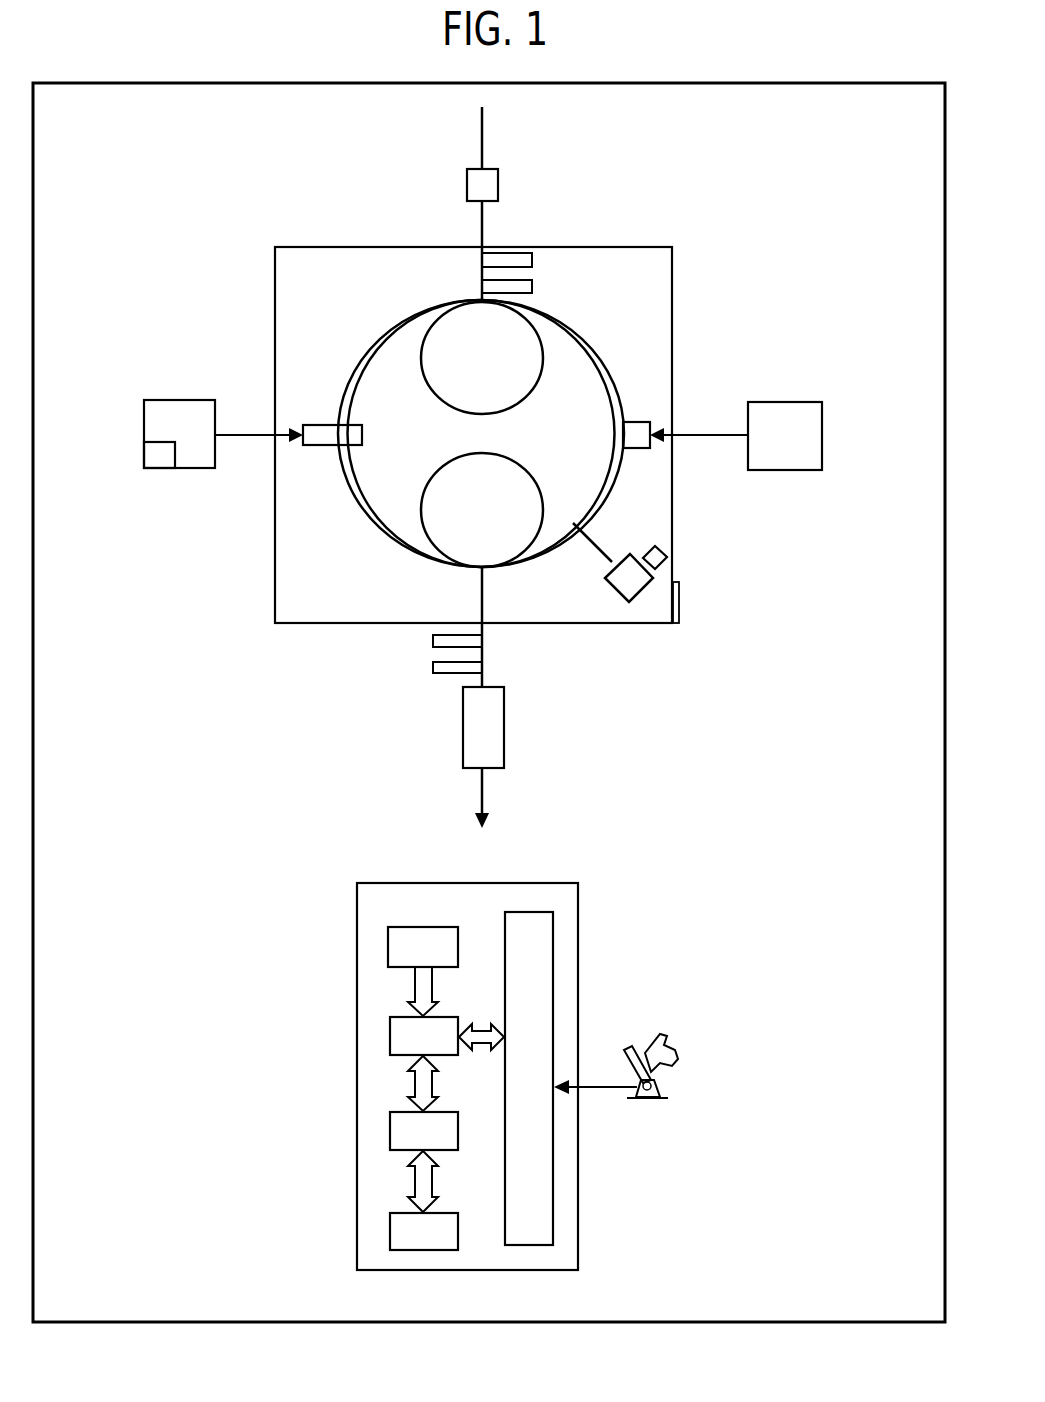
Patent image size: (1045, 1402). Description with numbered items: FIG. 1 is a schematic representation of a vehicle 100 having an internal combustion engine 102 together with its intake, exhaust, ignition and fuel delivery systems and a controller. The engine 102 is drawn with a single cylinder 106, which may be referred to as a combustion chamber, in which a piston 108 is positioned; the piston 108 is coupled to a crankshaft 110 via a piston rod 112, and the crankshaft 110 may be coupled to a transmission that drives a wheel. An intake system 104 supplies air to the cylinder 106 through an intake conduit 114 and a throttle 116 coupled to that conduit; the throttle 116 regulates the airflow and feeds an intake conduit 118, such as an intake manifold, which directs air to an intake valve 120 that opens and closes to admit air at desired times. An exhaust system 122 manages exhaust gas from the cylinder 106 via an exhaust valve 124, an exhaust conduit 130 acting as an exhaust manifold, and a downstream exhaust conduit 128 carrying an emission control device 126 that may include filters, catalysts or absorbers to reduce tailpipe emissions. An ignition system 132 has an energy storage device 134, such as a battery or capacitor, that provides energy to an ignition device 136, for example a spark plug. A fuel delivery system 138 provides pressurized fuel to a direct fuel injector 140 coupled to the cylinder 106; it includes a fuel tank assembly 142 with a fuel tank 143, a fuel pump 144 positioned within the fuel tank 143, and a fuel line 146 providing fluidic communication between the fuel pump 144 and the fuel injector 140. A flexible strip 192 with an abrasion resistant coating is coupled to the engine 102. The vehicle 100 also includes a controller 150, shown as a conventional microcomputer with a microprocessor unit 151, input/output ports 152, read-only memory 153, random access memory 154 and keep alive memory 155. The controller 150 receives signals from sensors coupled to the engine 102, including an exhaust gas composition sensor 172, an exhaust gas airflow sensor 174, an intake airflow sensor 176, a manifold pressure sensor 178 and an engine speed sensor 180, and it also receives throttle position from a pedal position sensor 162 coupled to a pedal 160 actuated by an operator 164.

The vehicle 100 is at (100, 83).
The internal combustion engine 102 is at (672, 300).
The intake system 104 is at (650, 158).
The cylinder 106 is at (397, 325).
The piston 108 is at (406, 325).
The crankshaft 110 is at (618, 588).
The piston rod 112 is at (595, 540).
The intake conduit 114 is at (482, 148).
The throttle 116 is at (498, 185).
The intake conduit 118 is at (482, 235).
The intake valve 120 is at (543, 357).
The exhaust system 122 is at (603, 678).
The exhaust valve 124 is at (543, 497).
The emission control device 126 is at (463, 745).
The exhaust conduit 128 is at (482, 783).
The exhaust conduit 130 is at (482, 595).
The ignition system 132 is at (845, 425).
The energy storage device 134 is at (755, 402).
The ignition device 136 is at (643, 413).
The fuel delivery system 138 is at (102, 435).
The fuel injector 140 is at (320, 425).
The fuel tank assembly 142 is at (160, 378).
The fuel tank 143 is at (205, 380).
The fuel pump 144 is at (175, 455).
The fuel line 146 is at (248, 437).
The controller 150 is at (362, 883).
The microprocessor unit 151 is at (456, 1003).
The input/output ports 152 is at (505, 945).
The read-only memory 153 is at (406, 915).
The random access memory 154 is at (456, 1097).
The keep alive memory 155 is at (456, 1198).
The pedal 160 is at (631, 1060).
The pedal position sensor 162 is at (657, 1090).
The operator 164 is at (673, 1050).
The exhaust gas composition sensor 172 is at (433, 641).
The exhaust gas airflow sensor 174 is at (433, 668).
The intake airflow sensor 176 is at (532, 257).
The manifold pressure sensor 178 is at (532, 286).
The engine speed sensor 180 is at (660, 543).
The flexible strip 192 is at (679, 605).